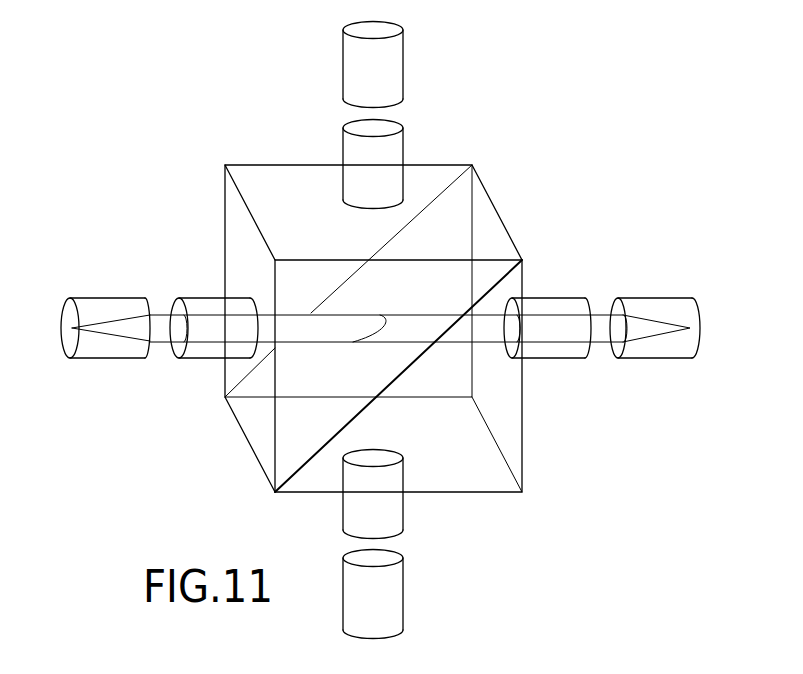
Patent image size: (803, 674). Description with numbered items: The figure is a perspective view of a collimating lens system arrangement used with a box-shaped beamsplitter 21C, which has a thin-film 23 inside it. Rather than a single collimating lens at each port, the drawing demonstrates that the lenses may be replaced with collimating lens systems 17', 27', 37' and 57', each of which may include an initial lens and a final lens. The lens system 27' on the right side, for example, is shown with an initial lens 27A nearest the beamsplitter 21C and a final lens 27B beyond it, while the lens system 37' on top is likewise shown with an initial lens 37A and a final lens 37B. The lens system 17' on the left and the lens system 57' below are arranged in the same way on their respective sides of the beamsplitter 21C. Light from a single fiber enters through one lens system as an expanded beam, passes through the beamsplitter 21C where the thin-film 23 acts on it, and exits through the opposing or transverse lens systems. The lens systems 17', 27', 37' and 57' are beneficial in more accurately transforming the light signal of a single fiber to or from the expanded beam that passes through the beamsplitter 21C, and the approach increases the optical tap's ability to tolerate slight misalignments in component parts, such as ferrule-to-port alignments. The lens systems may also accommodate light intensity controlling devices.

The box-shaped beamsplitter 21C is at (548, 497).
The thin-film 23 is at (287, 441).
The collimating lens system 17' is at (159, 296).
The collimating lens system 27' is at (604, 322).
The initial lens 27A is at (555, 357).
The final lens 27B is at (675, 357).
The collimating lens system 37' is at (371, 115).
The initial lens 37A is at (400, 148).
The final lens 37B is at (402, 82).
The collimating lens system 57' is at (412, 544).